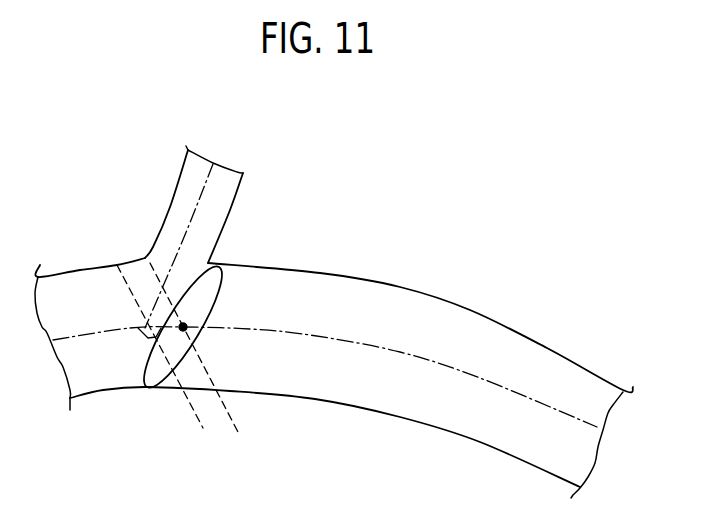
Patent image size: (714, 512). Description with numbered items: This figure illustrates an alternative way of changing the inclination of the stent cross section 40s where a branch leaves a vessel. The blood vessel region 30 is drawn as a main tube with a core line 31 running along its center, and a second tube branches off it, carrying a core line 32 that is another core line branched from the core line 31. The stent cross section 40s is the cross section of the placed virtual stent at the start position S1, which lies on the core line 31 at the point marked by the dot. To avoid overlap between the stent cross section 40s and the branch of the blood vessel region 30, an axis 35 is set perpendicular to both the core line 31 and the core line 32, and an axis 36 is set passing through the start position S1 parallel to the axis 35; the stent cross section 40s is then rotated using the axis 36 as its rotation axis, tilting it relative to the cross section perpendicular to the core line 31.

The blood vessel region 30 is at (417, 290).
The core line 31 is at (498, 383).
The core line 32 is at (198, 205).
The axis 35 is at (203, 422).
The axis 36 is at (223, 402).
The stent cross section 40s is at (148, 388).
The start position S1 is at (187, 320).